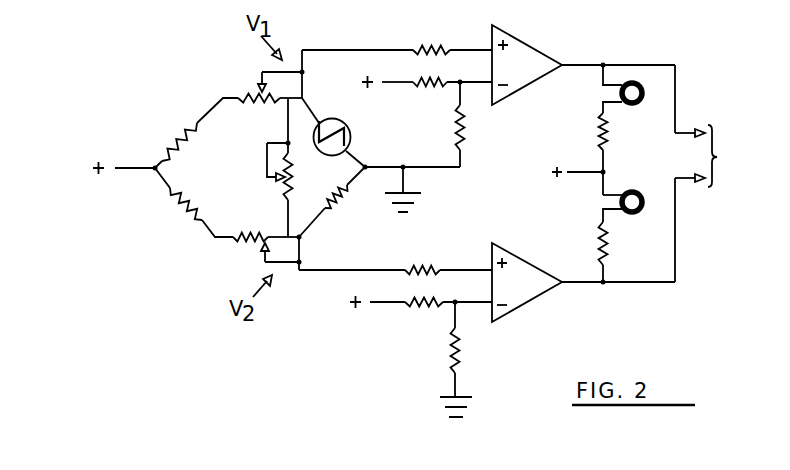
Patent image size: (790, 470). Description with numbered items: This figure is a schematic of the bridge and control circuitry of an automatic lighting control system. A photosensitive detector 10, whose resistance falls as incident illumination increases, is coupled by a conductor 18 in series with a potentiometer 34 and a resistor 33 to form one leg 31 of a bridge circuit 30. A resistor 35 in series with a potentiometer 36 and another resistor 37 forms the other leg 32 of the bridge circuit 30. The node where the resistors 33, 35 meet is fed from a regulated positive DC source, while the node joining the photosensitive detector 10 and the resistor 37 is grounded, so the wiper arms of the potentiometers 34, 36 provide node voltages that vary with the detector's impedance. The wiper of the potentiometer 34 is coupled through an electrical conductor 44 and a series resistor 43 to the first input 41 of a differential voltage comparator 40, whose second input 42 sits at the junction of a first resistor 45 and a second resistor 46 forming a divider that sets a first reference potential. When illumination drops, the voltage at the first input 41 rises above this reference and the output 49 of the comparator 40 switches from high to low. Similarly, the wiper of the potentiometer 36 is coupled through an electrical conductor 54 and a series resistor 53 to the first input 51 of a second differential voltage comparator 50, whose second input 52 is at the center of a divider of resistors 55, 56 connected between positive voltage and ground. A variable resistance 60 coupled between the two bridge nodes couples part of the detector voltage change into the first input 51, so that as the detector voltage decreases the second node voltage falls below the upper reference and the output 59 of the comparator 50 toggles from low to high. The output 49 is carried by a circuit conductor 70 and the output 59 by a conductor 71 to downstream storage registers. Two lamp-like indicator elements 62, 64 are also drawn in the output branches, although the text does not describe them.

The photosensitive detector 10 is at (350, 117).
The conductor 18 is at (317, 93).
The bridge circuit 30 is at (70, 168).
The leg of the bridge circuit 31 is at (182, 86).
The leg of the bridge circuit 32 is at (187, 253).
The resistor 33 is at (190, 133).
The potentiometer 34 is at (263, 83).
The resistor 35 is at (189, 202).
The potentiometer 36 is at (264, 254).
The resistor 37 is at (332, 202).
The differential voltage comparator 40 is at (538, 78).
The first input 41 is at (490, 45).
The second input 42 is at (490, 88).
The resistor 43 is at (431, 38).
The electrical conductor 44 is at (318, 30).
The first resistor 45 is at (427, 95).
The second resistor 46 is at (475, 124).
The output 49 is at (546, 31).
The differential voltage comparator 50 is at (531, 294).
The first input 51 is at (487, 263).
The second input 52 is at (487, 307).
The series resistor 53 is at (448, 258).
The electrical conductor 54 is at (334, 284).
The resistor 55 is at (421, 315).
The resistor 56 is at (445, 359).
The output 59 is at (539, 251).
The variable resistance 60 is at (268, 175).
The first indicator lamp 62 is at (623, 113).
The second indicator lamp 64 is at (620, 167).
The circuit conductor 70 is at (689, 106).
The conductor 71 is at (683, 182).